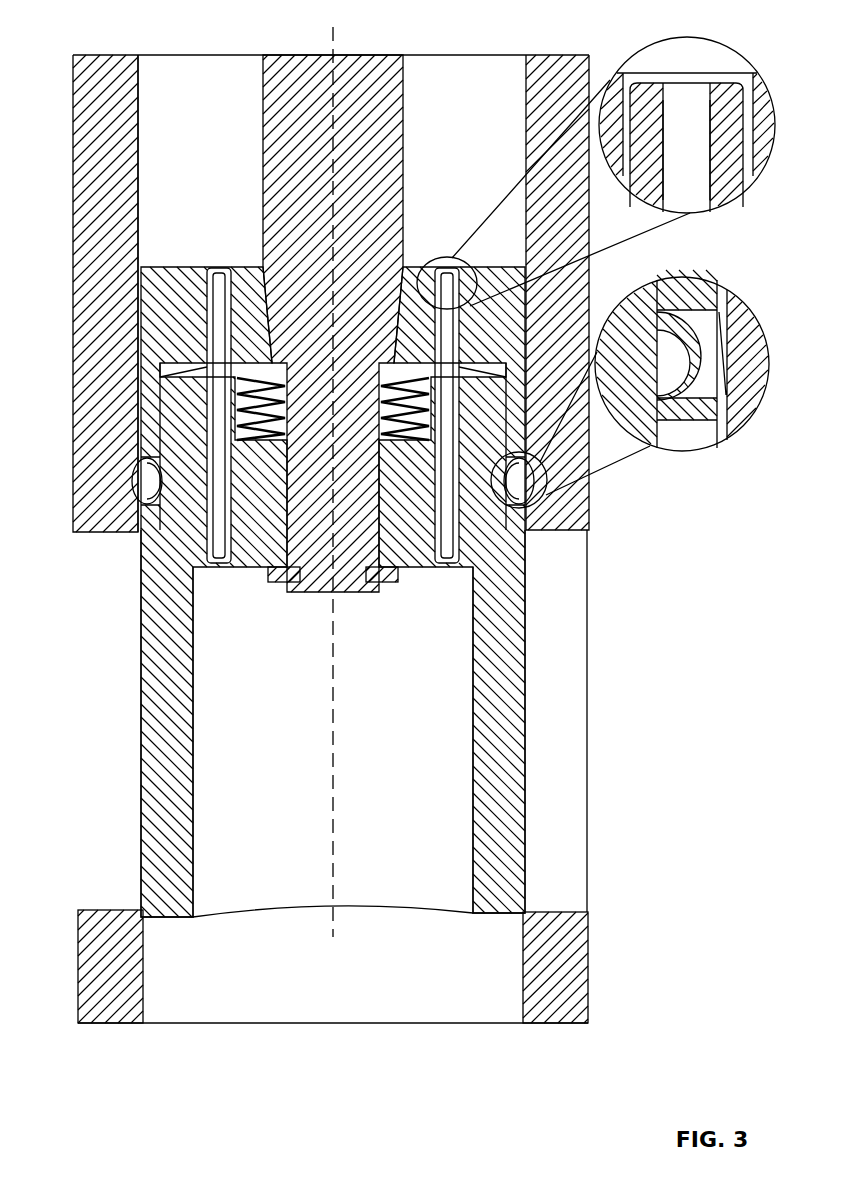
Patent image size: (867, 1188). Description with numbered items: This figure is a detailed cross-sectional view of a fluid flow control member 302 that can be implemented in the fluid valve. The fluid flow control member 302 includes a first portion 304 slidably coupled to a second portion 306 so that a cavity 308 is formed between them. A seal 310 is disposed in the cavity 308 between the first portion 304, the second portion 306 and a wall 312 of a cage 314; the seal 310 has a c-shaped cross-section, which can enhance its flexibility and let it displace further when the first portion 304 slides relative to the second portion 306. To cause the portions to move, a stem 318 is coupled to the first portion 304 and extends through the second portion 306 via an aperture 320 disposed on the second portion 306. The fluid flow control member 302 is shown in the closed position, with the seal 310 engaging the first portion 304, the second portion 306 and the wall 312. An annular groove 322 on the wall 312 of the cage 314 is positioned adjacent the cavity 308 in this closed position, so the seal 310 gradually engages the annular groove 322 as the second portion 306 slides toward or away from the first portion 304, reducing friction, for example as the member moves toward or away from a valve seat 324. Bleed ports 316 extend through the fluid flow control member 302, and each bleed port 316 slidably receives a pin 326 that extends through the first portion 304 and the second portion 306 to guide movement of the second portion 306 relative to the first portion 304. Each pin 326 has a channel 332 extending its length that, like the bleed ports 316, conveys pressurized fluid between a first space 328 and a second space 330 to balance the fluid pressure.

The fluid flow control member 302 is at (483, 80).
The first portion 304 is at (153, 265).
The second portion 306 is at (140, 680).
The cavity 308 is at (138, 460).
The seal 310 is at (143, 492).
The wall 312 is at (139, 73).
The cage 314 is at (73, 198).
The bleed port 316 is at (218, 266).
The stem 318 is at (262, 73).
The aperture 320 is at (388, 442).
The annular groove 322 is at (140, 498).
The valve seat 324 is at (115, 908).
The pin 326 is at (212, 569).
The first space 328 is at (172, 127).
The second space 330 is at (353, 933).
The channel 332 is at (688, 96).